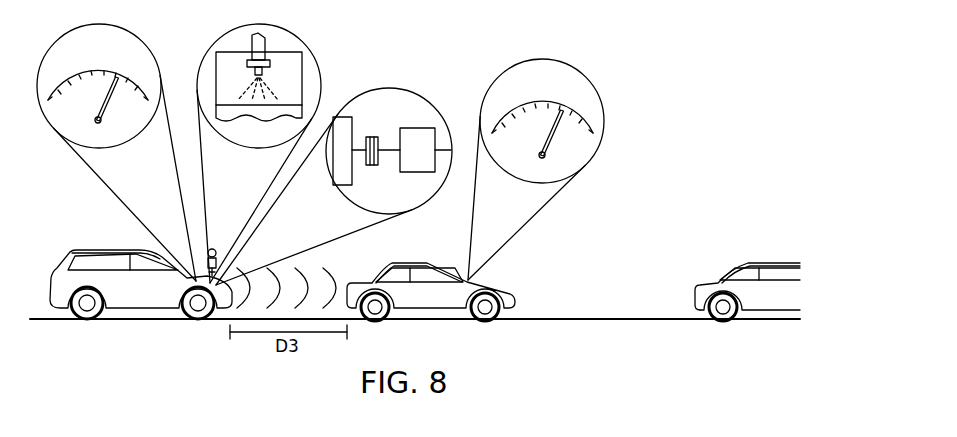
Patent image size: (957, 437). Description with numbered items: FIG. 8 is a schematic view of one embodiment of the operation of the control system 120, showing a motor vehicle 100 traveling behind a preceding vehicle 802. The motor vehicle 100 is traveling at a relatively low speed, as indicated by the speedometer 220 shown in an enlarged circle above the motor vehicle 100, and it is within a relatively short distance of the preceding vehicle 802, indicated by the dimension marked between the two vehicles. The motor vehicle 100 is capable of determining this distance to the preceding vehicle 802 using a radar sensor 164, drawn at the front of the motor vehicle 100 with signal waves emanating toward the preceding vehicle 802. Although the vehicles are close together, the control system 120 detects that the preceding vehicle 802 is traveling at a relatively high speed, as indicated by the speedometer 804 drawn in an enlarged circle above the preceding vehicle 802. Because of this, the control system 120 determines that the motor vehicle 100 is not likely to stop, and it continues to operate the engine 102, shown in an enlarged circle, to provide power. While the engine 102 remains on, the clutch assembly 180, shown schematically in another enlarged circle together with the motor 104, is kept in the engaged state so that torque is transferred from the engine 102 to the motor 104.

The motor vehicle 100 is at (93, 248).
The engine 102 is at (302, 80).
The motor 104 is at (420, 137).
The control system 120 is at (250, 254).
The radar sensor 164 is at (215, 250).
The clutch assembly 180 is at (378, 120).
The speedometer 220 is at (140, 62).
The preceding vehicle 802 is at (418, 262).
The speedometer 804 is at (587, 102).